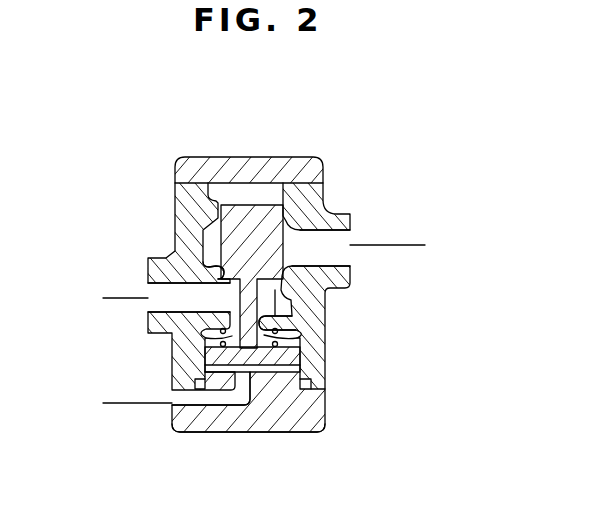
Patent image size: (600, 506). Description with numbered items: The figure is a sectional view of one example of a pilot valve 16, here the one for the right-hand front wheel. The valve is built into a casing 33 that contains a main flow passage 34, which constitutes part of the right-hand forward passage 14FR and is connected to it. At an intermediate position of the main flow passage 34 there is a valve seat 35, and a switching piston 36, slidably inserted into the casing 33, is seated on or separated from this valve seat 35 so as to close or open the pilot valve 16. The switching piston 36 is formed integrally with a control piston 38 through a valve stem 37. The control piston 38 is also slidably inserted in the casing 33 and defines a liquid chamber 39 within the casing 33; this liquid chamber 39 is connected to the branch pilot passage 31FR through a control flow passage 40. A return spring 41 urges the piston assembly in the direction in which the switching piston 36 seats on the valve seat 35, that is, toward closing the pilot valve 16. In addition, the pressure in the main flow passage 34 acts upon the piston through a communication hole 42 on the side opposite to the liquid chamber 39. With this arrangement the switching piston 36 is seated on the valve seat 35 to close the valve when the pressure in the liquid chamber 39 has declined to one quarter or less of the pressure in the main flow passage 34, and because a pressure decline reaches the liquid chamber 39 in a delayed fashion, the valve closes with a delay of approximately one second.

The pilot valve 16 is at (284, 155).
The casing 33 is at (327, 332).
The main flow passage 34 is at (334, 250).
The valve seat 35 is at (205, 272).
The switching piston 36 is at (222, 217).
The valve stem 37 is at (289, 300).
The control piston 38 is at (297, 360).
The liquid chamber 39 is at (279, 372).
The control flow passage 40 is at (219, 407).
The return spring 41 is at (184, 374).
The communication hole 42 is at (291, 347).
The right-hand forward passage 14FR is at (115, 298).
The branch pilot passage 31FR is at (110, 403).